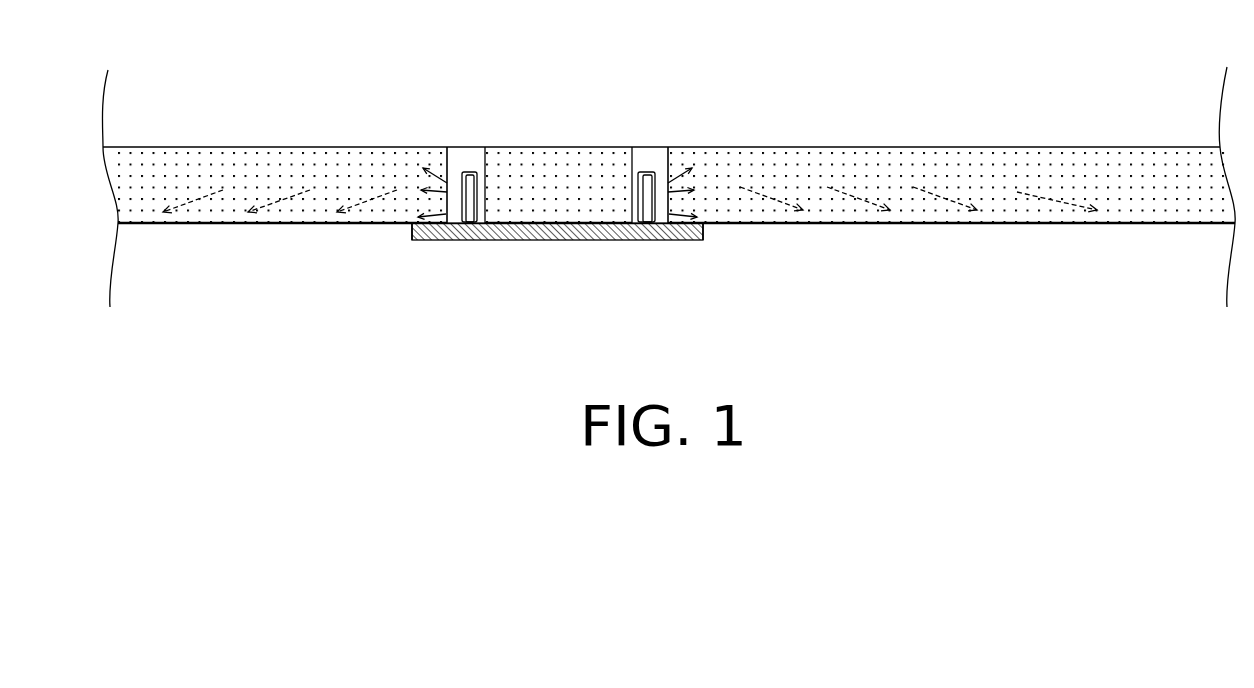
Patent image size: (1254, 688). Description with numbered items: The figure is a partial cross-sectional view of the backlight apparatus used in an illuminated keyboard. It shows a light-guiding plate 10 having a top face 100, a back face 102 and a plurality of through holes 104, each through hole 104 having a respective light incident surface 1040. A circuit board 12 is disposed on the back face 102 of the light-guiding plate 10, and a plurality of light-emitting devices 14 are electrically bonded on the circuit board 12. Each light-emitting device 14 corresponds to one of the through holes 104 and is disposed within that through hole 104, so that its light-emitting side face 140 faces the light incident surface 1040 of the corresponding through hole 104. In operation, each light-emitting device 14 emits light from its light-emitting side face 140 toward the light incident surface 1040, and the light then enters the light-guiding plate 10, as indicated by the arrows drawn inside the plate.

The light-guiding plate 10 is at (1132, 202).
The top face 100 is at (178, 147).
The back face 102 is at (165, 227).
The through hole 104 is at (467, 160).
The light incident surface 1040 is at (450, 183).
The circuit board 12 is at (553, 235).
The light-emitting device 14 is at (470, 205).
The light-emitting side face 140 is at (422, 240).